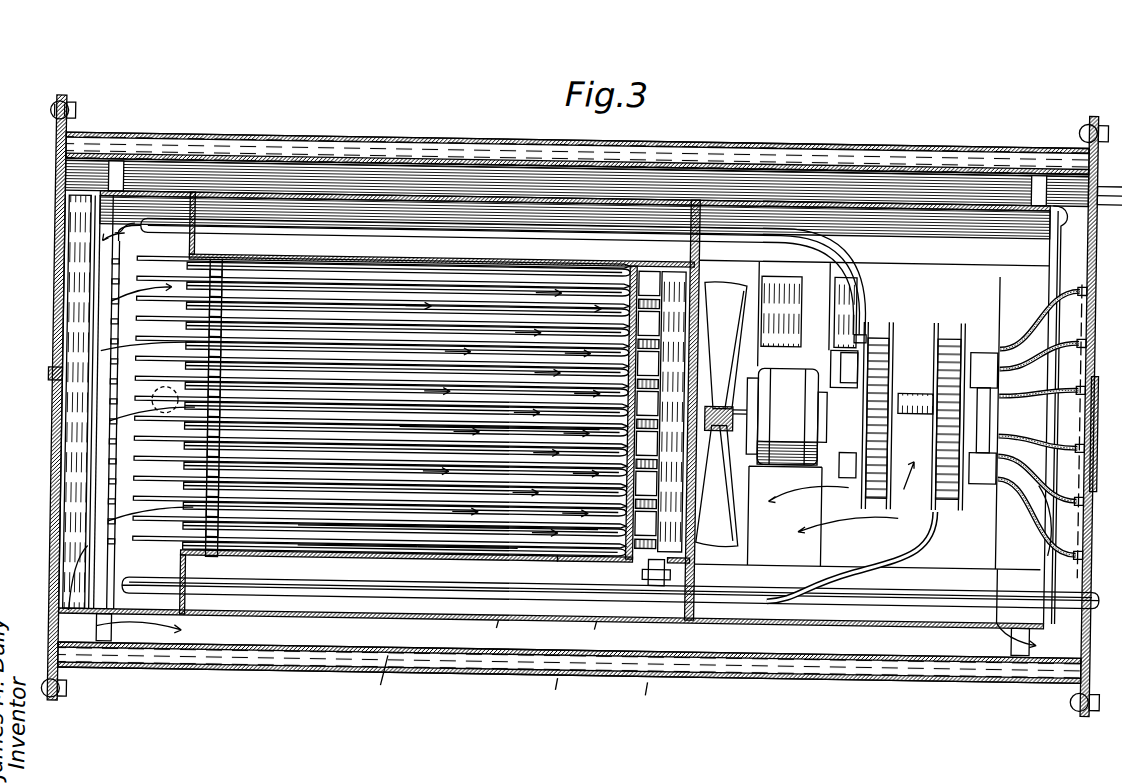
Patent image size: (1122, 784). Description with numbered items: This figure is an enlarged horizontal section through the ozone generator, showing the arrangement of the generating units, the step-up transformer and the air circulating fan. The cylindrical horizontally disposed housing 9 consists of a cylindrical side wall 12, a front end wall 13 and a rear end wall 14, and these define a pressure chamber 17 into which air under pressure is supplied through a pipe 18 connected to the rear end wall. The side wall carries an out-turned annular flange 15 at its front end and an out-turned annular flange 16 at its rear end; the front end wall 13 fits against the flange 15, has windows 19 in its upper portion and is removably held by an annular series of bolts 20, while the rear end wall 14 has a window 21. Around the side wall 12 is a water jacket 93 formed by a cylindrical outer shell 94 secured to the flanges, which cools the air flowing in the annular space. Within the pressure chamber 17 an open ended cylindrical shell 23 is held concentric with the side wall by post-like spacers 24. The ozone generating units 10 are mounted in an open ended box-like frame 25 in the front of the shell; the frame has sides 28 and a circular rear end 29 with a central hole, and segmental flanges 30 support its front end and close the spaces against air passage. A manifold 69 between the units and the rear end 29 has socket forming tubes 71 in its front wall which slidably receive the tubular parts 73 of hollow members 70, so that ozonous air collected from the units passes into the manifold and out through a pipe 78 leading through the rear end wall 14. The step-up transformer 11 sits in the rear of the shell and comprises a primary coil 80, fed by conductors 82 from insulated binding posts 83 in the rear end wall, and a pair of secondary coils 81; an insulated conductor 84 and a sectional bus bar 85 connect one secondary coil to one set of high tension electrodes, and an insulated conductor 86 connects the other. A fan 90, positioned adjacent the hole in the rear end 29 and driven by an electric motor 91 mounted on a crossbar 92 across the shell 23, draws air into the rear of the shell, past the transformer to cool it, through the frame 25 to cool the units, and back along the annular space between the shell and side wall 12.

The housing 9 is at (377, 678).
The ozone generating units 10 is at (333, 528).
The step-up transformer 11 is at (906, 482).
The side wall 12 is at (503, 632).
The front end wall 13 is at (52, 247).
The rear end wall 14 is at (1089, 489).
The annular flange 15 is at (62, 692).
The annular flange 16 is at (1083, 694).
The pressure chamber 17 is at (845, 183).
The pipe 18 is at (1102, 172).
The windows 19 is at (52, 326).
The bolts 20 is at (70, 108).
The window 21 is at (1096, 360).
The cylindrical shell 23 is at (603, 633).
The spacers 24 is at (118, 185).
The box-like frame 25 is at (455, 550).
The sides 28 is at (400, 550).
The rear end 29 is at (700, 215).
The segmental flanges 30 is at (188, 598).
The manifold 69 is at (661, 403).
The hollow members 70 is at (548, 522).
The socket forming tubes 71 is at (658, 390).
The tubular parts 73 is at (608, 421).
The pipe 78 is at (925, 586).
The primary coil 80 is at (916, 413).
The secondary coils 81 is at (932, 326).
The conductors 82 is at (1022, 510).
The binding posts 83 is at (1080, 540).
The insulated conductor 84 is at (556, 224).
The sectional bus bar 85 is at (112, 344).
The insulated conductor 86 is at (568, 588).
The fan 90 is at (735, 296).
The electric motor 91 is at (787, 416).
The crossbar 92 is at (823, 516).
The water jacket 93 is at (562, 693).
The outer shell 94 is at (651, 696).